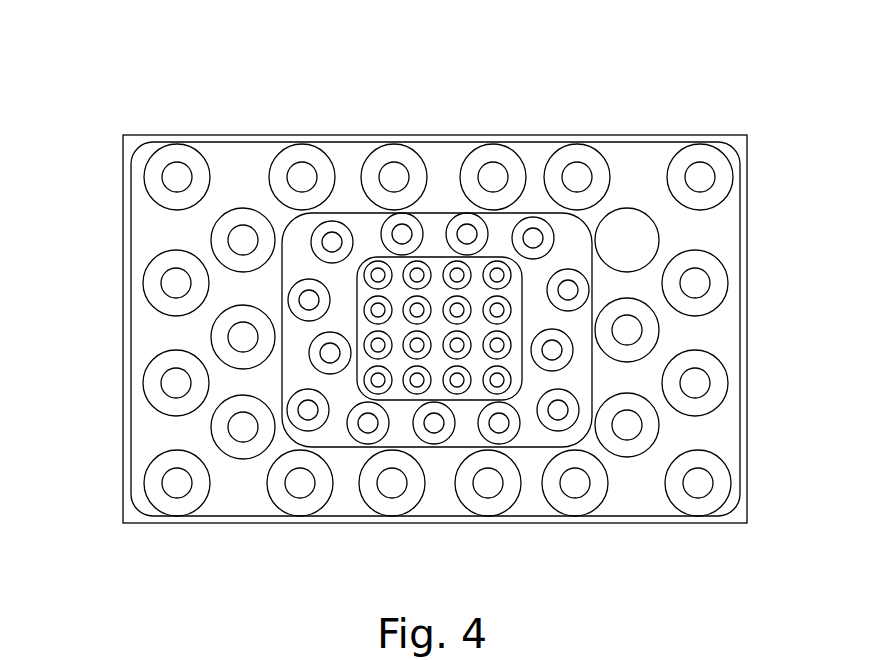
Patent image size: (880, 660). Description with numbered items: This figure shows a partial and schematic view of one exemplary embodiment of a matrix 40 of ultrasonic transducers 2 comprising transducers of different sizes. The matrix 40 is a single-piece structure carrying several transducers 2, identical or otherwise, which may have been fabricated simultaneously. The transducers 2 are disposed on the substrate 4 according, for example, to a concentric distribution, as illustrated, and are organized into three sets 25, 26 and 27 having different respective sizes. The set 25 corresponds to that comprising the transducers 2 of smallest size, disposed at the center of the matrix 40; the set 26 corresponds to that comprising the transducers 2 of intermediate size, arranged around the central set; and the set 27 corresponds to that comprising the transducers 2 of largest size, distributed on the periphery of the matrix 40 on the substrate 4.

The matrix 40 is at (116, 94).
The set of transducers of largest size 27 is at (131, 209).
The substrate 4 is at (238, 492).
The ultrasonic transducer 2 is at (676, 176).
The set of transducers of intermediate size 26 is at (362, 212).
The set of transducers of smallest size 25 is at (463, 403).